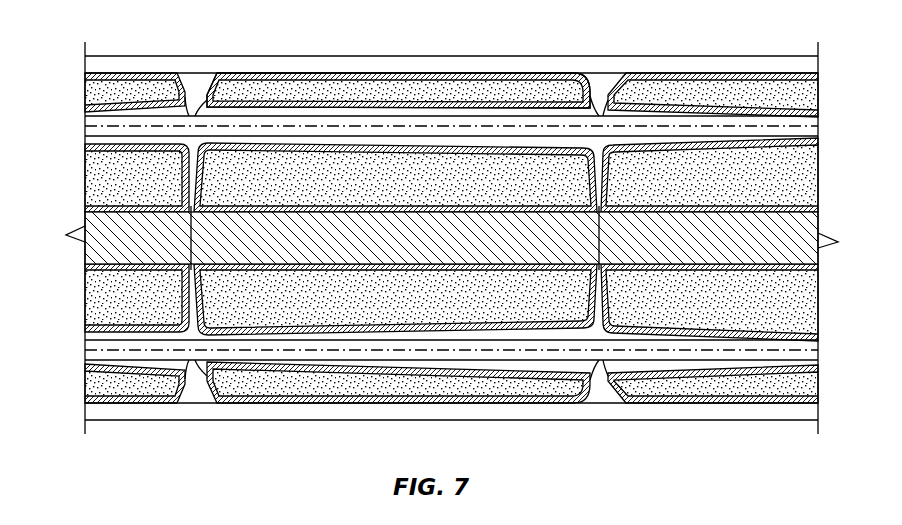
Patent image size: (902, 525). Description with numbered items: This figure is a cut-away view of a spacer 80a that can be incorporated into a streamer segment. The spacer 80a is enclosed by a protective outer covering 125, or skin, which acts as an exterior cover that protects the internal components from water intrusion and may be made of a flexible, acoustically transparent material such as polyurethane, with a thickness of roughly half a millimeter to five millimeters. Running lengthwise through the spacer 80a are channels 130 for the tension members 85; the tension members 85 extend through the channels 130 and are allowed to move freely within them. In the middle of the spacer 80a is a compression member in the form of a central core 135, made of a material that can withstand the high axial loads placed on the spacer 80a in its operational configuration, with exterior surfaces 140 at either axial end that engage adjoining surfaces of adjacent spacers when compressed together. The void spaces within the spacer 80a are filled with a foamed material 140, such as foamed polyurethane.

The spacer 80a is at (572, 80).
The tension members 85 is at (195, 117).
The outer covering 125 is at (340, 78).
The channels 130 is at (587, 108).
The central core 135 is at (403, 258).
The foamed material 140 is at (190, 224).